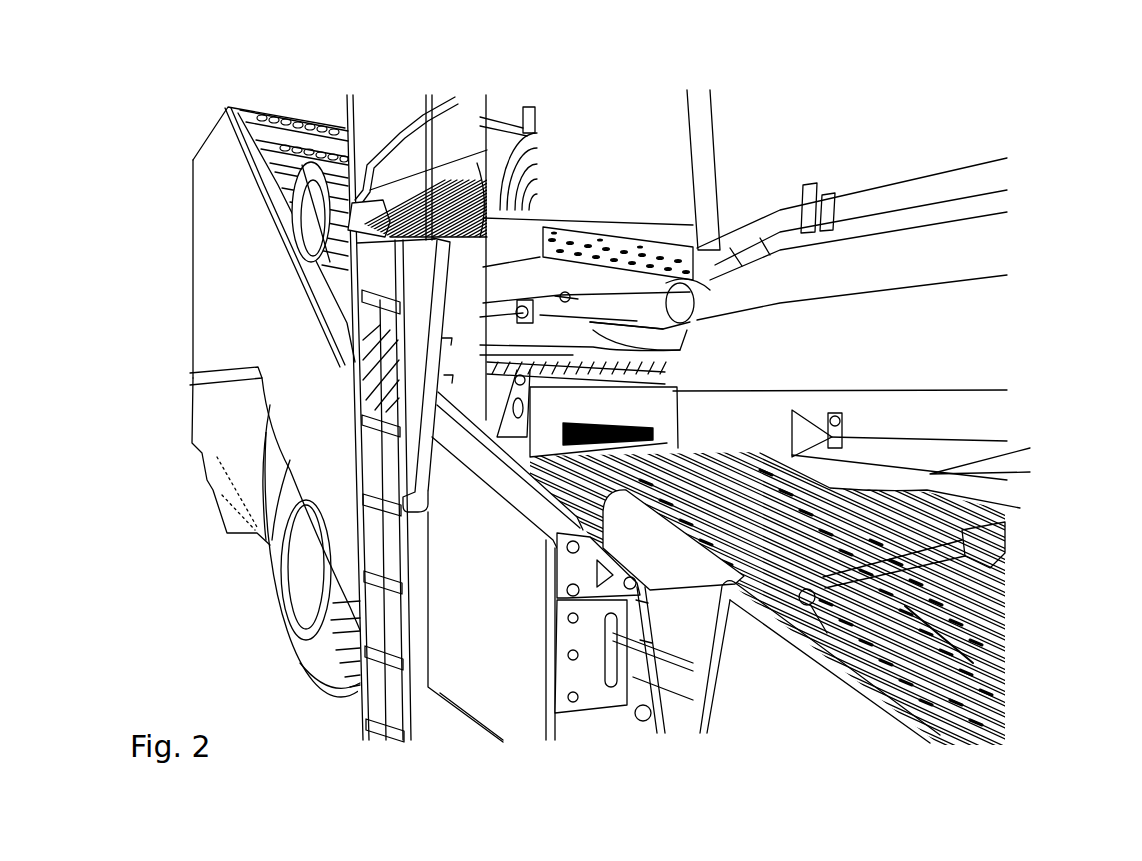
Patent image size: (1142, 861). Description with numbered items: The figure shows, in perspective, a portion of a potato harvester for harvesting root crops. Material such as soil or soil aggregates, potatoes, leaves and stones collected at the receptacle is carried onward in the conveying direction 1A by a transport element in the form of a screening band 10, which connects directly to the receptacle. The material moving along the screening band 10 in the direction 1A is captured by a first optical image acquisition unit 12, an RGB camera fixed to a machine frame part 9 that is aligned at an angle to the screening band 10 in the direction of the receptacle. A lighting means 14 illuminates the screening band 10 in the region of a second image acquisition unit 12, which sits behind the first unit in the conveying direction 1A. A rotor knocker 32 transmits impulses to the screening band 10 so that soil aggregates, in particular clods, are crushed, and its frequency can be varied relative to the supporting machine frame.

The conveying direction 1A is at (912, 619).
The machine frame part 9 is at (947, 462).
The screening band 10 is at (930, 492).
The optical image acquisition unit 12 is at (563, 297).
The lighting means 14 is at (520, 303).
The rotor knocker 32 is at (697, 322).